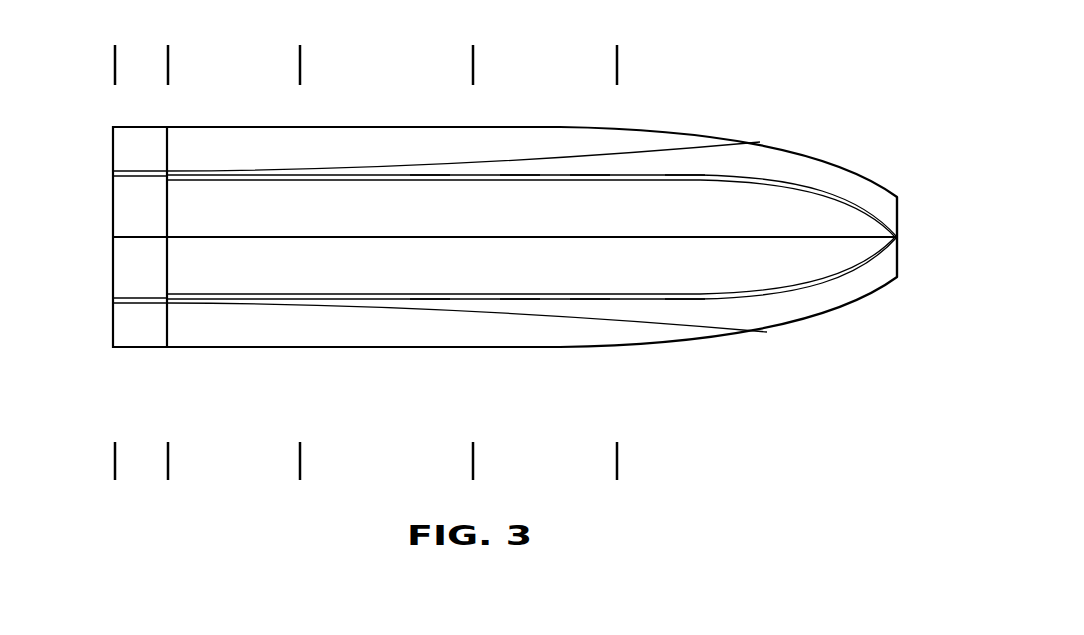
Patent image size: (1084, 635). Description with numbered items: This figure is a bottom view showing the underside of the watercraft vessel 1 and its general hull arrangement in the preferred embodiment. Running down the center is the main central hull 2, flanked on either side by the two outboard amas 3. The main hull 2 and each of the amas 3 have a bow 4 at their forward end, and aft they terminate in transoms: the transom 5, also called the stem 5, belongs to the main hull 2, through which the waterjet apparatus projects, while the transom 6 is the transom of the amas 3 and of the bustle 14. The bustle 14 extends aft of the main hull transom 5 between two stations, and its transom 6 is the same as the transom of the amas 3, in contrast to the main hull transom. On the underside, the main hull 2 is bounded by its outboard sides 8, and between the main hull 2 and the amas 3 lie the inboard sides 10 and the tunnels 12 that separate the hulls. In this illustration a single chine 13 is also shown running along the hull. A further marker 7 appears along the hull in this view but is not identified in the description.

The watercraft vessel 1 is at (523, 92).
The main central hull 2 is at (726, 219).
The outboard amas 3 is at (351, 325).
The bow 4 is at (771, 150).
The transom 5 is at (164, 263).
The transom 6 is at (112, 149).
The section line 7 is at (166, 63).
The outboard sides 8 is at (591, 180).
The inboard sides 10 is at (518, 169).
The tunnels 12 is at (686, 169).
The chine 13 is at (433, 180).
The bustle 14 is at (130, 331).